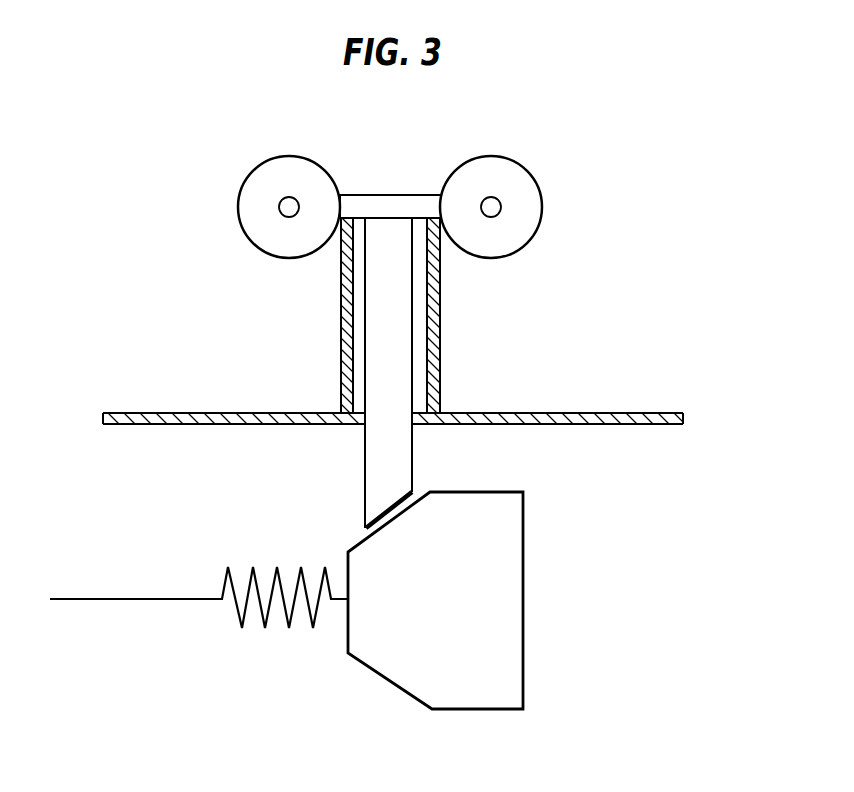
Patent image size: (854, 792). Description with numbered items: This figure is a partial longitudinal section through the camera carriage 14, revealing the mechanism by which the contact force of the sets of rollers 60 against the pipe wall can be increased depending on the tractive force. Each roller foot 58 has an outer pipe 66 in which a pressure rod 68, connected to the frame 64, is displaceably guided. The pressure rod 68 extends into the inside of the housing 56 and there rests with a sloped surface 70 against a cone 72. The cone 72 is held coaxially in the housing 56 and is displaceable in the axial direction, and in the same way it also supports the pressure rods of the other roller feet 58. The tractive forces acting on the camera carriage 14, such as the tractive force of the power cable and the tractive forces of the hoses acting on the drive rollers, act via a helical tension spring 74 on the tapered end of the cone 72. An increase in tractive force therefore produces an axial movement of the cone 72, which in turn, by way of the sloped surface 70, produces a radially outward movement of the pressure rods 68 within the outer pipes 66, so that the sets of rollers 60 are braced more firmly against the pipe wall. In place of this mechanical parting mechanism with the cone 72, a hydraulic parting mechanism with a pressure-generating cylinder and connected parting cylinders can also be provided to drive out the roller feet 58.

The camera carriage 14 is at (672, 245).
The housing 56 is at (559, 412).
The roller foot 58 is at (238, 310).
The set of rollers 60 is at (322, 150).
The frame 64 is at (386, 195).
The outer pipe 66 is at (440, 326).
The pressure rod 68 is at (433, 386).
The sloped surface 70 is at (392, 510).
The cone 72 is at (523, 553).
The helical tension spring 74 is at (253, 567).